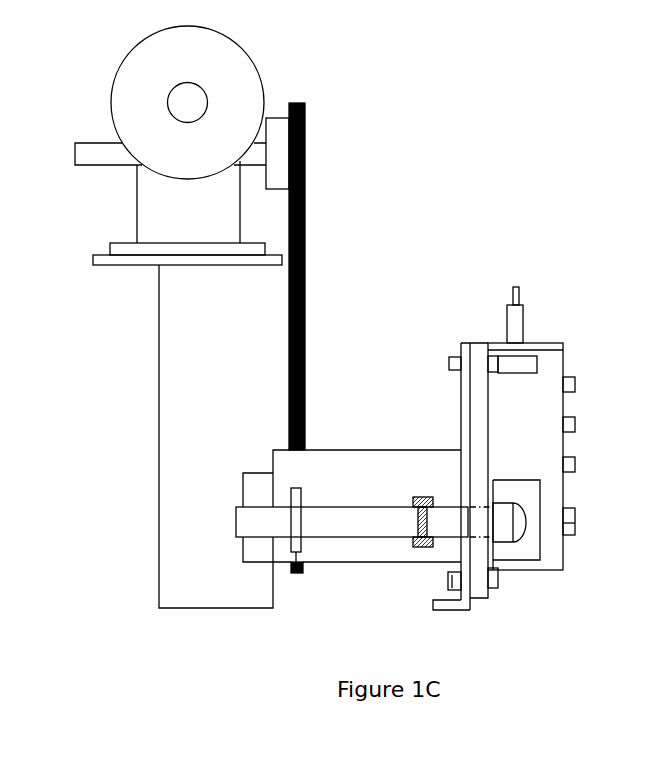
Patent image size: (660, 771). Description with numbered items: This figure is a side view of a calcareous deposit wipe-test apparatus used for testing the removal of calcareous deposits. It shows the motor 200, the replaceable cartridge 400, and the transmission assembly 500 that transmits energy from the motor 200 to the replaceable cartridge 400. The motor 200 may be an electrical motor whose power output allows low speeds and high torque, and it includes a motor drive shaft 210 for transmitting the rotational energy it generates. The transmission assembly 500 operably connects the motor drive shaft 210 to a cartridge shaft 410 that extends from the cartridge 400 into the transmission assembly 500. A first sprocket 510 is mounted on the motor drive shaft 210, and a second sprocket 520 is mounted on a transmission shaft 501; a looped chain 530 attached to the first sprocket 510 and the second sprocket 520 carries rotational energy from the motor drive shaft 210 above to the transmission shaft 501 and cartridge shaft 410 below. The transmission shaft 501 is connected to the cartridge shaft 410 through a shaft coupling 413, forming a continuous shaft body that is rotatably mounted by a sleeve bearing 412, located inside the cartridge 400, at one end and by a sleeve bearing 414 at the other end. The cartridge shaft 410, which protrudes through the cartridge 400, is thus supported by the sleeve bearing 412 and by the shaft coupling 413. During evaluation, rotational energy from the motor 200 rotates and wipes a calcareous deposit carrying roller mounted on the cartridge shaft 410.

The motor 200 is at (173, 198).
The motor drive shaft 210 is at (263, 120).
The first sprocket 510 is at (267, 118).
The looped chain 530 is at (305, 228).
The sleeve bearing 414 is at (252, 473).
The transmission assembly 500 is at (364, 467).
The transmission shaft 501 is at (375, 505).
The second sprocket 520 is at (296, 574).
The shaft coupling 413 is at (415, 544).
The replaceable cartridge 400 is at (547, 362).
The cartridge shaft 410 is at (445, 522).
The sleeve bearing 412 is at (515, 547).